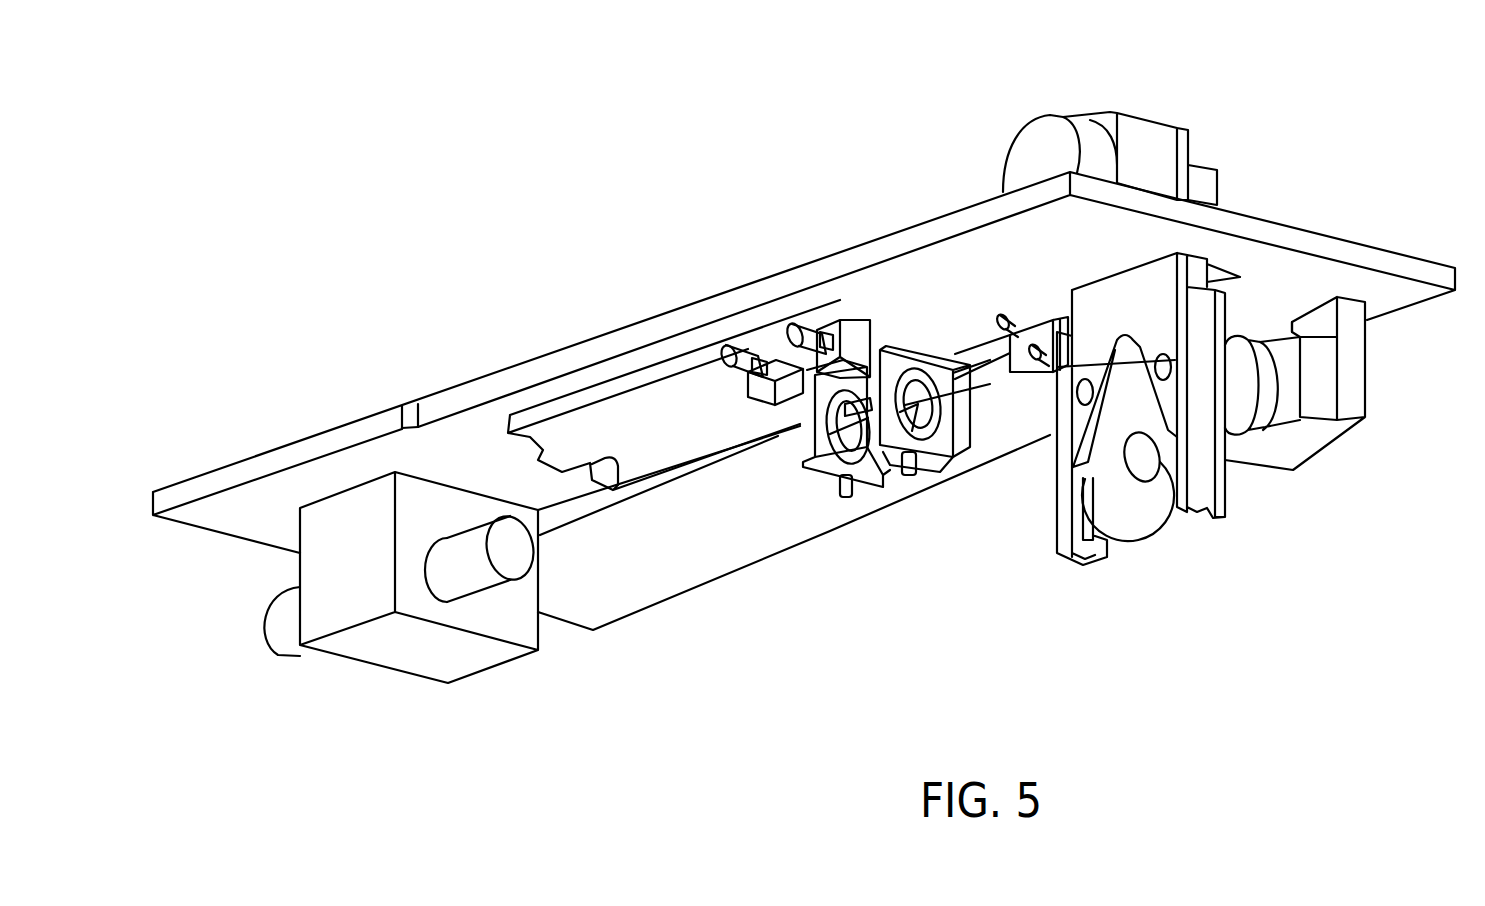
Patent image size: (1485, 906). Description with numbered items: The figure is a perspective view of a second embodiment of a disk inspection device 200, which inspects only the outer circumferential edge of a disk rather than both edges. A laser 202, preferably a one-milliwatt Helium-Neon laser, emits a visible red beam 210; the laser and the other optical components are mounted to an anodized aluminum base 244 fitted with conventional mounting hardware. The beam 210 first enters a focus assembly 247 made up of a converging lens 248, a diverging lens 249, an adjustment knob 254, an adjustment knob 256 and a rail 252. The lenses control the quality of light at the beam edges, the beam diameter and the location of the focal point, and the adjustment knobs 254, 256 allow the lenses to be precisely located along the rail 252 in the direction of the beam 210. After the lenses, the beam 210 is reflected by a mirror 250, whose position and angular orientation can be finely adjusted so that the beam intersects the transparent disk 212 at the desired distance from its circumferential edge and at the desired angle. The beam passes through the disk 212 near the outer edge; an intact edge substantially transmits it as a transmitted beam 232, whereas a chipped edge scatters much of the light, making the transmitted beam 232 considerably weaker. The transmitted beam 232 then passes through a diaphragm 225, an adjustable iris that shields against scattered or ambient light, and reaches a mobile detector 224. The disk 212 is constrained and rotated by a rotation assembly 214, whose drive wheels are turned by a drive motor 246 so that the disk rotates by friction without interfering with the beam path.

The disk inspection device 200 is at (1347, 152).
The laser 202 is at (298, 658).
The beam 210 is at (596, 516).
The disk 212 is at (1128, 545).
The rotation assembly 214 is at (1225, 490).
The mobile detector 224 is at (1367, 373).
The diaphragm 225 is at (1270, 395).
The transmitted beam 232 is at (1241, 380).
The base 244 is at (607, 338).
The drive motor 246 is at (1140, 110).
The focus assembly 247 is at (732, 515).
The converging lens 248 is at (823, 477).
The diverging lens 249 is at (933, 455).
The mirror 250 is at (1020, 377).
The rail 252 is at (565, 398).
The adjustment knob 254 is at (780, 327).
The adjustment knob 256 is at (845, 315).